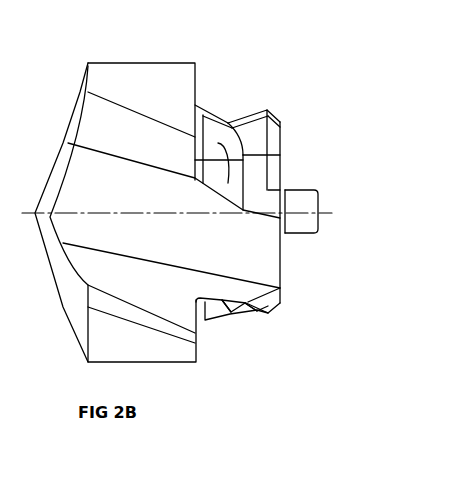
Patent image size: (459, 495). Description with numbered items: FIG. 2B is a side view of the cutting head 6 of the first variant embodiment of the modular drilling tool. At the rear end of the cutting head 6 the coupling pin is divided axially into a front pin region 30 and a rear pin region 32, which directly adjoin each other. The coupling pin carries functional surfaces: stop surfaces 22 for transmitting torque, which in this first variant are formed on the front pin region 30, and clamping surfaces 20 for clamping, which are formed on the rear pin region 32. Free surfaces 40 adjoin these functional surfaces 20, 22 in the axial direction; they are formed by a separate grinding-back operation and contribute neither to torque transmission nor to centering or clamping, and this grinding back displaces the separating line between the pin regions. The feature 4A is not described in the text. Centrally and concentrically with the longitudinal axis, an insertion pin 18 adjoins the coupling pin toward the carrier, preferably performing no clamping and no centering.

The cutting head 6 is at (296, 47).
The stop surfaces 22 is at (217, 143).
The clamping surfaces 20 is at (252, 110).
The free surfaces 40 is at (218, 113).
The rounded edge 4A is at (228, 123).
The insertion pin 18 is at (303, 200).
The front pin region 30 is at (217, 327).
The rear pin region 32 is at (258, 327).